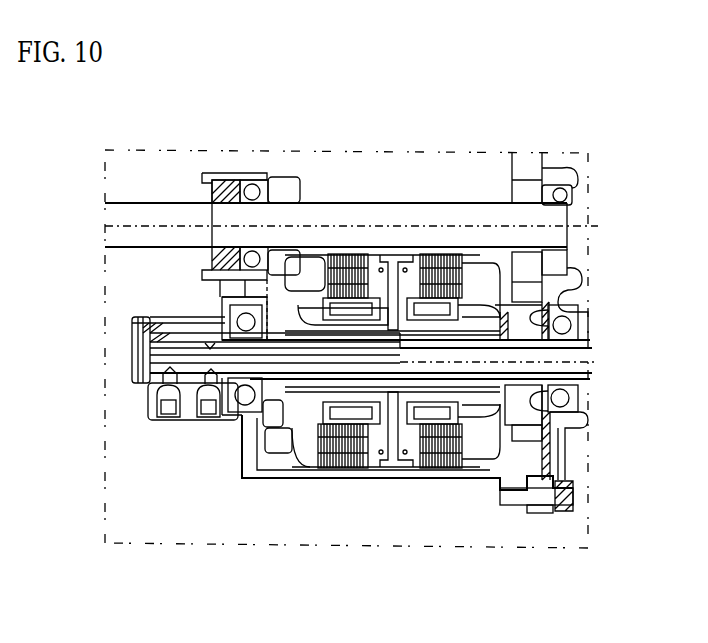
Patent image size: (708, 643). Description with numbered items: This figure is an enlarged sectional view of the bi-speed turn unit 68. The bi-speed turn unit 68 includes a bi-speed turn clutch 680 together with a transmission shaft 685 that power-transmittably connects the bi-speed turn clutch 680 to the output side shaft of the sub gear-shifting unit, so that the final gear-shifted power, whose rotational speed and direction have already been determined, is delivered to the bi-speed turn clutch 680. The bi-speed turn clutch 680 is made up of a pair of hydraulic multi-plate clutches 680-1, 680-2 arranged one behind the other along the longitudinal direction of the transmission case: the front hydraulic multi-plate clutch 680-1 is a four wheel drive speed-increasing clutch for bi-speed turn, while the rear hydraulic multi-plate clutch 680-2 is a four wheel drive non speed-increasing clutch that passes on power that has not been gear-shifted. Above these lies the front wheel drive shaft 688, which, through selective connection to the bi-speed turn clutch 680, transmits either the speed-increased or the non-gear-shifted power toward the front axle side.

The bi-speed turn unit 68 is at (365, 111).
The front wheel drive shaft 688 is at (147, 215).
The transmission shaft 685 is at (588, 352).
The bi-speed turn clutch 680 is at (447, 587).
The hydraulic multi-plate clutch 680-1 is at (305, 455).
The hydraulic multi-plate clutch 680-2 is at (402, 462).